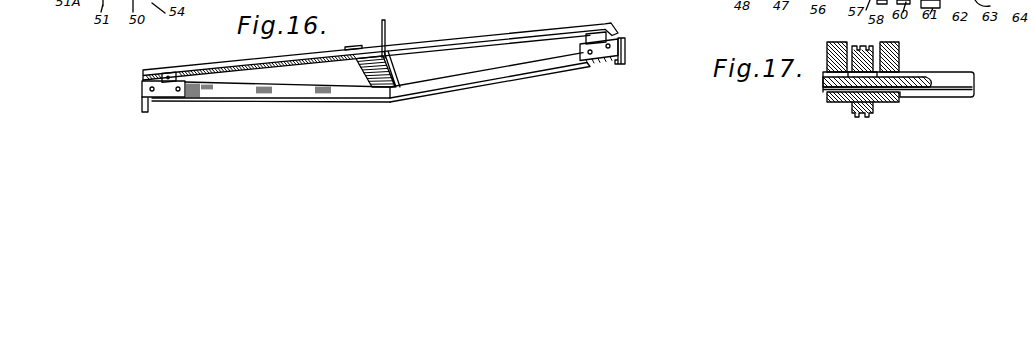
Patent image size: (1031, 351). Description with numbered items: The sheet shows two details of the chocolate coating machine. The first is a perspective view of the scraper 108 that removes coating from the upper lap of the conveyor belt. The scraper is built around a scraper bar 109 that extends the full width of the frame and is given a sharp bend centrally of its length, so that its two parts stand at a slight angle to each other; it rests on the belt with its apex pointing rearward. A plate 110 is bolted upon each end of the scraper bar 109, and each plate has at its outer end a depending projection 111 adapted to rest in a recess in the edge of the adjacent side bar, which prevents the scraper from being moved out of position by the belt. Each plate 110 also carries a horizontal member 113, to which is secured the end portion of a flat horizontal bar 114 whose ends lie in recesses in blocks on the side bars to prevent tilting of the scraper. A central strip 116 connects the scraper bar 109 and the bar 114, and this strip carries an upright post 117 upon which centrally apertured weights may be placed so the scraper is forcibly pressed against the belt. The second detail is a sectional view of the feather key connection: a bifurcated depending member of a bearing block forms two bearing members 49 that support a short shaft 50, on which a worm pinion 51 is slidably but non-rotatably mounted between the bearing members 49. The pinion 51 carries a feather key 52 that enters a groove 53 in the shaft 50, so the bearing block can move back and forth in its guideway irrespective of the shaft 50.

In FIG. 16, the scraper 108 is at (338, 78).
In FIG. 16, the scraper bar 109 is at (470, 76).
In FIG. 16, the plate 110 is at (162, 90).
In FIG. 16, the depending projection 111 is at (142, 103).
In FIG. 16, the horizontal member 113 is at (175, 72).
In FIG. 16, the flat horizontal bar 114 is at (445, 40).
In FIG. 16, the central strip 116 is at (396, 64).
In FIG. 16, the upright post 117 is at (388, 25).
In FIG. 17, the bearing members 49 is at (827, 44).
In FIG. 17, the short shaft 50 is at (958, 86).
In FIG. 17, the worm pinion 51 is at (862, 118).
In FIG. 17, the feather key 52 is at (848, 82).
In FIG. 17, the groove 53 is at (913, 77).